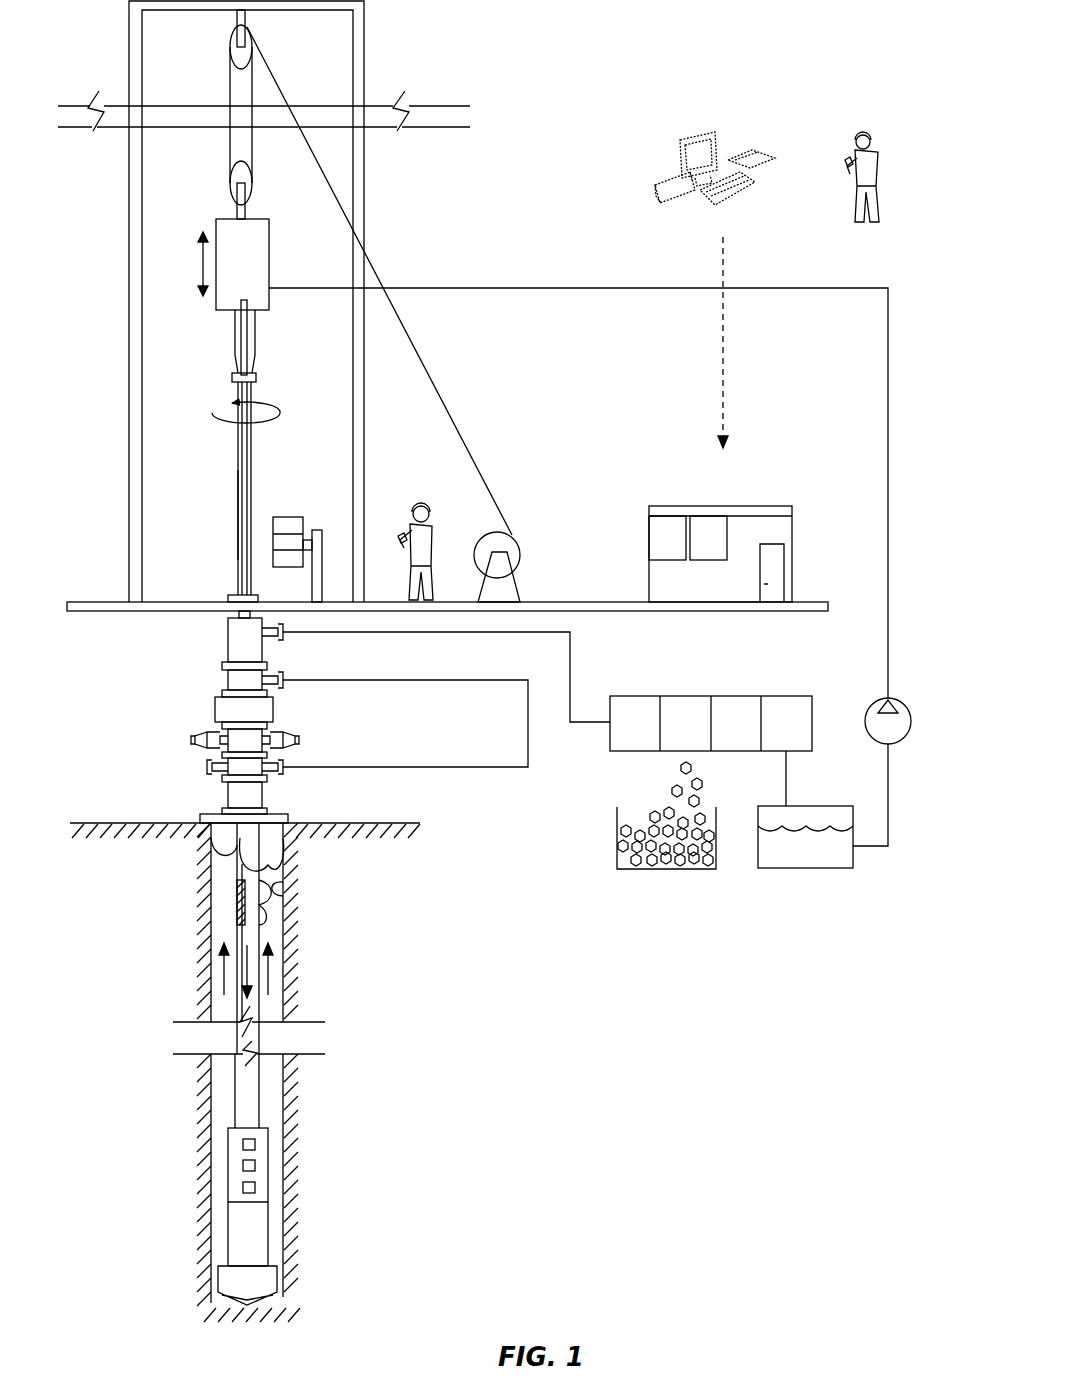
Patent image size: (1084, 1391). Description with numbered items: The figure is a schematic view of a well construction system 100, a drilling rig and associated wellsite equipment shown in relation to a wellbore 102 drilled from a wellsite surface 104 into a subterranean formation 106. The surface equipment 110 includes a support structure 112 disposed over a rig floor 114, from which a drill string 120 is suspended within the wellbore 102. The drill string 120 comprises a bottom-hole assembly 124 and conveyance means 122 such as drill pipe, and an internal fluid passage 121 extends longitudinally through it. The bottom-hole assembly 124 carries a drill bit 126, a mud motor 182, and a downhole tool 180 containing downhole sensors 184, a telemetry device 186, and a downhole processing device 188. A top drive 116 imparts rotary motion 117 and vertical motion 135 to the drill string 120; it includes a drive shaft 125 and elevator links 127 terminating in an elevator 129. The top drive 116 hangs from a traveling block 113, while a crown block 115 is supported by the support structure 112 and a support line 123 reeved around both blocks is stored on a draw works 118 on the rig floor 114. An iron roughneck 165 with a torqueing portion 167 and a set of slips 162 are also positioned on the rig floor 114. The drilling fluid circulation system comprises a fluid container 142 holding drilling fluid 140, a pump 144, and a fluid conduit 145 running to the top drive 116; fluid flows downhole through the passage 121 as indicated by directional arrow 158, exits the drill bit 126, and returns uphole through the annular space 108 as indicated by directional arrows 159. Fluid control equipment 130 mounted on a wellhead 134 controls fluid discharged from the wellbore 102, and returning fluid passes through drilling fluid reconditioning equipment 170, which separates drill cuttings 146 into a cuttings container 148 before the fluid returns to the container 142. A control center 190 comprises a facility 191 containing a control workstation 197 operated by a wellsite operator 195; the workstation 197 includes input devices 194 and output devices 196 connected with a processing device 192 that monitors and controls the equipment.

The well construction system 100 is at (86, 44).
The wellbore 102 is at (283, 880).
The wellsite surface 104 is at (342, 823).
The subterranean formation 106 is at (352, 1288).
The annular space 108 is at (272, 922).
The surface equipment 110 is at (790, 347).
The support structure 112 is at (364, 52).
The traveling block 113 is at (230, 185).
The rig floor 114 is at (100, 600).
The crown block 115 is at (228, 47).
The top drive 116 is at (269, 258).
The rotary motion 117 is at (218, 404).
The draw works 118 is at (520, 555).
The drill string 120 is at (237, 467).
The internal fluid passage 121 is at (237, 920).
The conveyance means 122 is at (237, 525).
The support line 123 is at (470, 448).
The bottom-hole assembly 124 is at (270, 1135).
The drive shaft 125 is at (255, 325).
The drill bit 126 is at (218, 1282).
The elevator links 127 is at (235, 345).
The elevator 129 is at (233, 377).
The fluid control equipment 130 is at (215, 710).
The wellhead 134 is at (222, 810).
The vertical motion 135 is at (203, 262).
The drilling fluid 140 is at (835, 858).
The fluid container 142 is at (776, 868).
The pump 144 is at (911, 721).
The fluid conduit 145 is at (888, 480).
The drill cuttings 146 is at (693, 865).
The cuttings container 148 is at (635, 869).
The directional arrow 158 is at (248, 980).
The directional arrows 159 is at (285, 978).
The slips 162 is at (228, 598).
The iron roughneck 165 is at (316, 530).
The torqueing portion 167 is at (280, 517).
The drilling fluid reconditioning equipment 170 is at (685, 696).
The downhole tool 180 is at (228, 1170).
The mud motor 182 is at (228, 1235).
The downhole sensors 184 is at (255, 1188).
The telemetry device 186 is at (255, 1145).
The downhole processing device 188 is at (255, 1166).
The control center 190 is at (690, 480).
The facility 191 is at (768, 506).
The processing device 192 is at (655, 190).
The input devices 194 is at (700, 100).
The wellsite operator 195 is at (420, 505).
The output devices 196 is at (680, 160).
The control workstation 197 is at (698, 156).